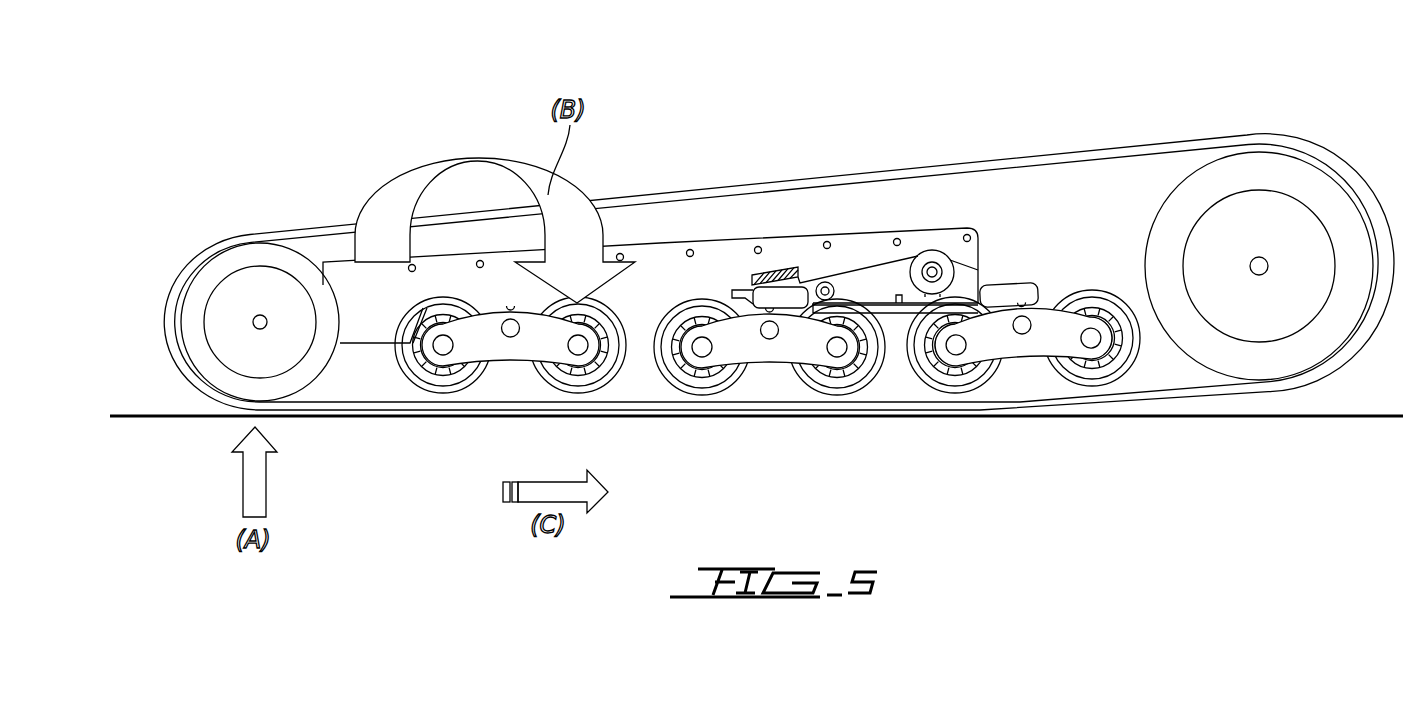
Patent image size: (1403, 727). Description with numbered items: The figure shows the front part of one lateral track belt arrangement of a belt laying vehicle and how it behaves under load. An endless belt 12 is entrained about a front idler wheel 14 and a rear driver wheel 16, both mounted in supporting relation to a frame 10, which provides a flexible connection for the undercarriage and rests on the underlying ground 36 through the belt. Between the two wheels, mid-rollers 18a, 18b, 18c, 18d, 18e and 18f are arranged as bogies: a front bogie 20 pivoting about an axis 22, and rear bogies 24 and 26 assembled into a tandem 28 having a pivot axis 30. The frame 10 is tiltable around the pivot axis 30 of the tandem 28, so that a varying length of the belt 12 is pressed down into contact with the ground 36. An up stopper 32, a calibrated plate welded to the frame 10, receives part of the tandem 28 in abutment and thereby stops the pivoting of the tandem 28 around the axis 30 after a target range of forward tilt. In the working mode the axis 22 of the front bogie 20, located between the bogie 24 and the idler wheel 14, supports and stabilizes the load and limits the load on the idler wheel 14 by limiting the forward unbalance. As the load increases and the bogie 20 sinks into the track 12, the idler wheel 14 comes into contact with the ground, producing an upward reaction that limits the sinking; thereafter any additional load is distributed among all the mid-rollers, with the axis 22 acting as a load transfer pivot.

The frame 10 is at (650, 262).
The endless belt 12 is at (1155, 140).
The idler wheel 14 is at (205, 288).
The driver wheel 16 is at (1262, 168).
The mid-roller 18a is at (430, 386).
The mid-roller 18b is at (565, 386).
The mid-roller 18c is at (687, 383).
The mid-roller 18d is at (822, 383).
The mid-roller 18e is at (943, 383).
The mid-roller 18f is at (1068, 383).
The front bogie 20 is at (550, 346).
The axis of front bogie 22 is at (509, 337).
The rear bogie 24 is at (792, 343).
The rear bogie 26 is at (1050, 345).
The tandem 28 is at (1008, 272).
The pivot axis 30 is at (934, 262).
The up stopper 32 is at (775, 270).
The underlying ground 36 is at (189, 420).